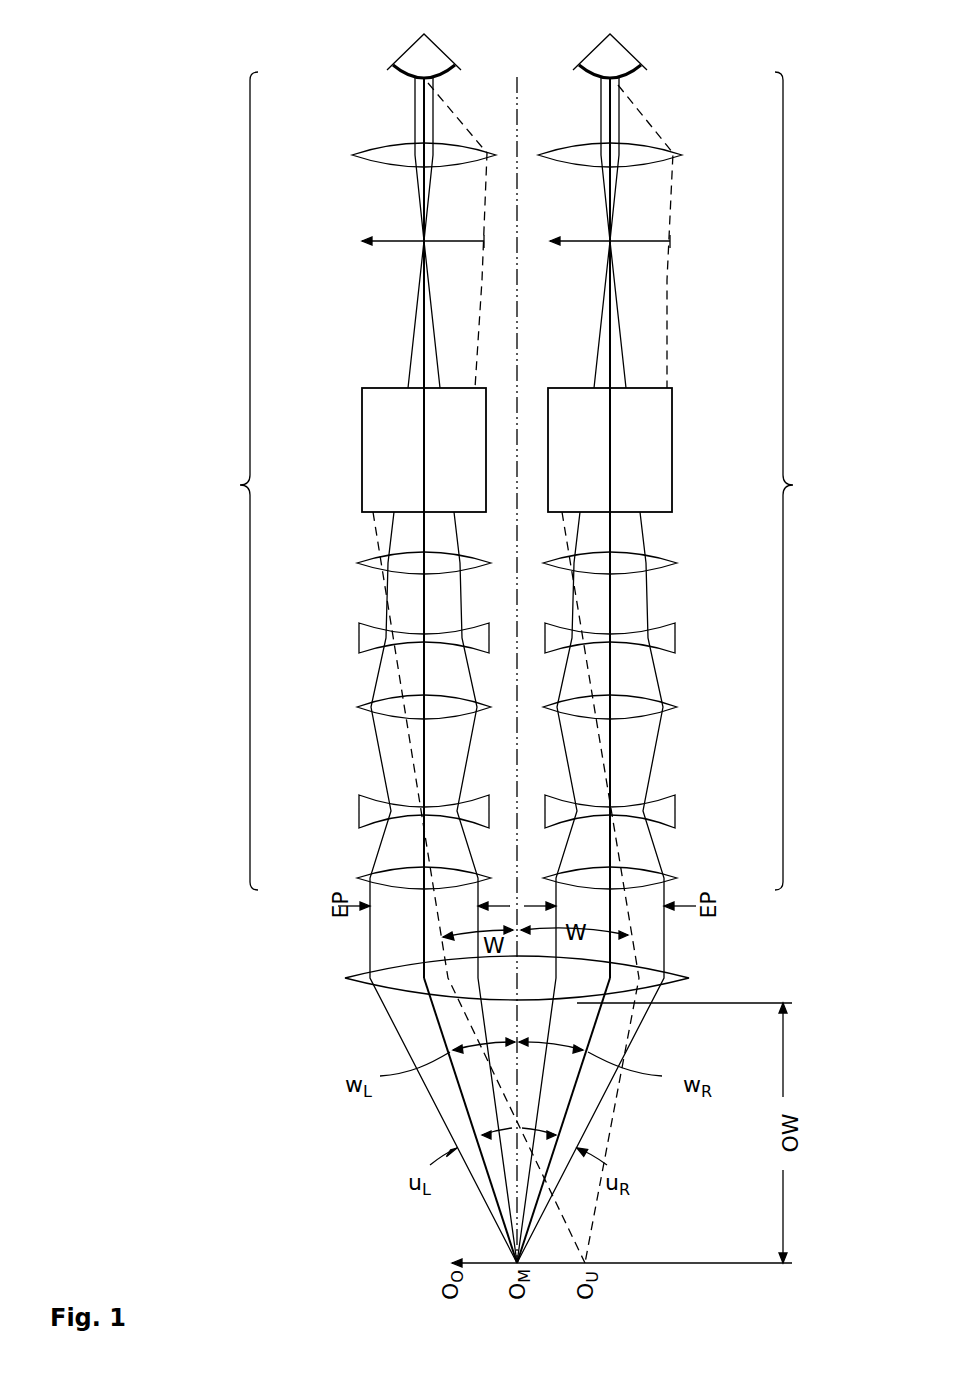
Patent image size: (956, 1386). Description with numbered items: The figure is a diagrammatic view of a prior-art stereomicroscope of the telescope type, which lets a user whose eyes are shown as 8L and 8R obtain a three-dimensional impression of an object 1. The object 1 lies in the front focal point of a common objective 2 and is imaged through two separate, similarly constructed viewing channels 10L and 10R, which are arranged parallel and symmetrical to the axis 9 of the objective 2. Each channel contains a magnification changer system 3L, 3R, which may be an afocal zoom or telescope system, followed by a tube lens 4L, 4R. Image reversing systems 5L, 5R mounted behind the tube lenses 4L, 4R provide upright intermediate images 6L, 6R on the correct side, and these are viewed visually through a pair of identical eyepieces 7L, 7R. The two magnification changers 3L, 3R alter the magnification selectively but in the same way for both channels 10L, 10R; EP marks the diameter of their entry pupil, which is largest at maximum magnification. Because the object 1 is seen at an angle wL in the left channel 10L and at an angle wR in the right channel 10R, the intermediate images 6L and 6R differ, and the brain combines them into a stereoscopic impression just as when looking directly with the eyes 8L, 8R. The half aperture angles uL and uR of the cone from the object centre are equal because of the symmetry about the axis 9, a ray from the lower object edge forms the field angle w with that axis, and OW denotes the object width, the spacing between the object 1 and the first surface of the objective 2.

The object 1 is at (480, 1262).
The objective 2 is at (357, 973).
The magnification changer system 3L is at (331, 617).
The magnification changer system 3R is at (702, 617).
The tube lens 4L is at (378, 553).
The tube lens 4R is at (658, 553).
The image reversing system 5L is at (372, 422).
The image reversing system 5R is at (662, 422).
The intermediate image 6L is at (398, 240).
The intermediate image 6R is at (648, 240).
The eyepiece 7L is at (376, 147).
The eyepiece 7R is at (660, 146).
The eye 8L is at (394, 64).
The eye 8R is at (630, 64).
The axis of the objective 9 is at (517, 77).
The viewing channel 10L is at (223, 481).
The viewing channel 10R is at (810, 481).